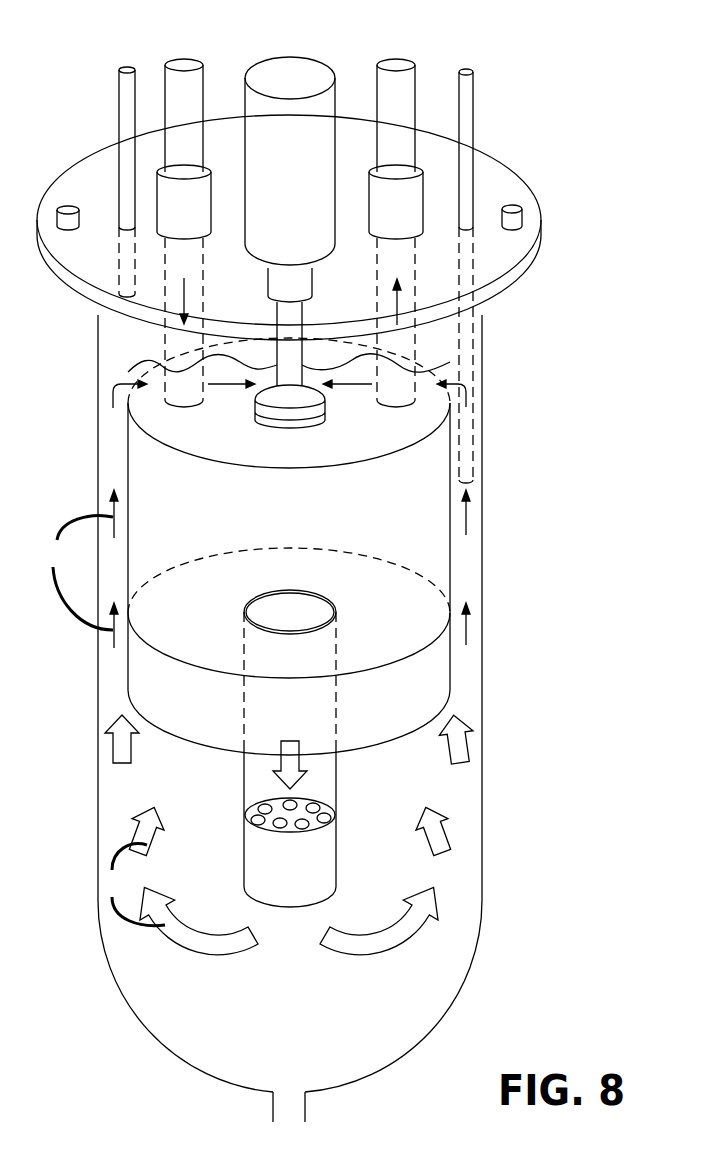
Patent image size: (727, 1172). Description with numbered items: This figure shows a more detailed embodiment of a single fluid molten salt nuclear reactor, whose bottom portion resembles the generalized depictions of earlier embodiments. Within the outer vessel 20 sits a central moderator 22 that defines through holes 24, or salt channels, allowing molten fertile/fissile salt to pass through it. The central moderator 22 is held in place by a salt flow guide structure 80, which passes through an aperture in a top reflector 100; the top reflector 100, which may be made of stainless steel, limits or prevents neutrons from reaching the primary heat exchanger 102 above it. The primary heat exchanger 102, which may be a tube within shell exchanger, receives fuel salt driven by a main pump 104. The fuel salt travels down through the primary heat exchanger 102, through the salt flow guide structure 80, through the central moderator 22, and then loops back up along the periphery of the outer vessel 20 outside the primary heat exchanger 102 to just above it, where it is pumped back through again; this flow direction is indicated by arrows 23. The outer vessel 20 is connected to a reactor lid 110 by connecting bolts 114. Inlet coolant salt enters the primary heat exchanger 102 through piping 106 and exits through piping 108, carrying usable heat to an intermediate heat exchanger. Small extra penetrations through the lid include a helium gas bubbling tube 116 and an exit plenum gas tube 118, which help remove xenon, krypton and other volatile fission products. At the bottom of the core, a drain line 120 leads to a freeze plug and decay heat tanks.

The outer vessel 20 is at (97, 715).
The central moderator 22 is at (242, 850).
The arrows 23 is at (261, 667).
The through holes 24 is at (330, 812).
The salt flow guide structure 80 is at (337, 797).
The top reflector 100 is at (400, 657).
The primary heat exchanger 102 is at (414, 470).
The main pump 104 is at (314, 77).
The piping 106 is at (165, 92).
The piping 108 is at (416, 90).
The reactor lid 110 is at (542, 220).
The connecting bolts 114 is at (512, 210).
The helium gas bubbling tube 116 is at (476, 100).
The exit plenum gas tube 118 is at (118, 92).
The drain line 120 is at (273, 1108).